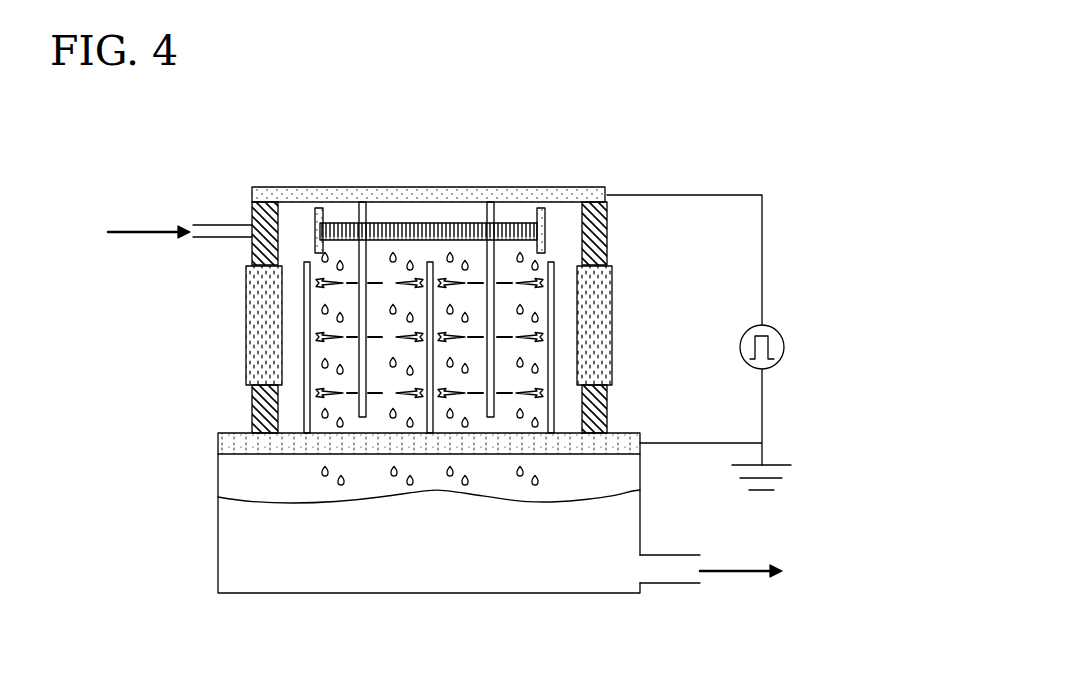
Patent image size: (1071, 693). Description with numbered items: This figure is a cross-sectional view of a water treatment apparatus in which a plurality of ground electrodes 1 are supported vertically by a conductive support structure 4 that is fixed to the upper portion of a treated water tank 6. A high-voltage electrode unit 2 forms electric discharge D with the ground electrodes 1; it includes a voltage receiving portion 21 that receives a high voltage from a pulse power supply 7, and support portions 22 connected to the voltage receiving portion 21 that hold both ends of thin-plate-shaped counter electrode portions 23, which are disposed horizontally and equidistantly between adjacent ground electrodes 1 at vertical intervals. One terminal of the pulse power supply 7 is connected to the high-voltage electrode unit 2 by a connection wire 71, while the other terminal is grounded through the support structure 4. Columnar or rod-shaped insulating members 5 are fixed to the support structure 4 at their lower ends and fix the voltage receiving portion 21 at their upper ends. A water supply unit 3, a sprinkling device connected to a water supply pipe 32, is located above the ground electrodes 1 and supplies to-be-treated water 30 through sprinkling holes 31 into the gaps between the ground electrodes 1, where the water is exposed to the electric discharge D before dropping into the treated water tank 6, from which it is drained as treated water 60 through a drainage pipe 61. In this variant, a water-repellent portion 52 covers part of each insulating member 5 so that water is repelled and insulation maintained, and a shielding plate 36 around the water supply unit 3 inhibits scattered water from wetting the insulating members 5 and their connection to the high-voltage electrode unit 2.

The ground electrode 1 is at (609, 258).
The high-voltage electrode unit 2 is at (370, 188).
The water supply unit 3 is at (412, 224).
The support structure 4 is at (272, 455).
The insulating member 5 is at (608, 397).
The treated water tank 6 is at (218, 537).
The pulse power supply 7 is at (770, 327).
The voltage receiving portion 21 is at (607, 193).
The support portion 22 is at (343, 373).
The counter electrode portion 23 is at (508, 277).
The to-be-treated water 30 is at (132, 225).
The sprinkling hole 31 is at (393, 242).
The water supply pipe 32 is at (200, 225).
The shielding plate 36 is at (547, 225).
The water-repellent portion 52 is at (612, 300).
The treated water 60 is at (723, 572).
The drainage pipe 61 is at (675, 584).
The connection wire 71 is at (680, 195).
The electric discharge D is at (313, 407).